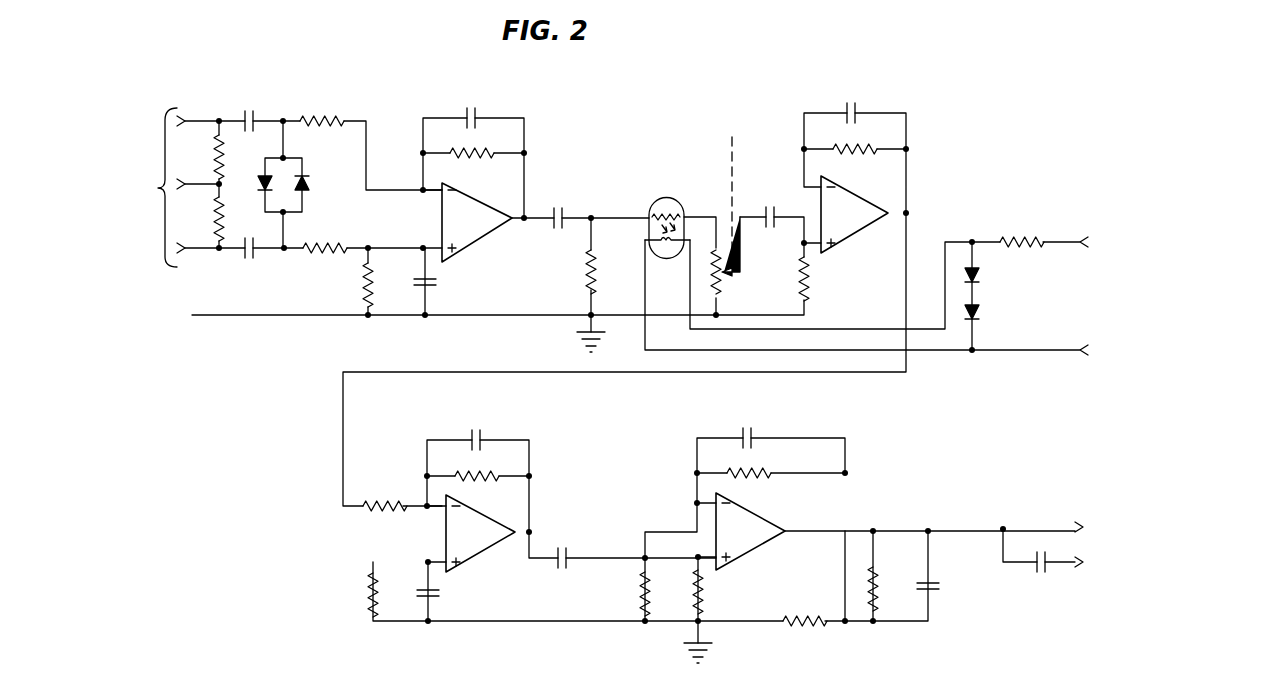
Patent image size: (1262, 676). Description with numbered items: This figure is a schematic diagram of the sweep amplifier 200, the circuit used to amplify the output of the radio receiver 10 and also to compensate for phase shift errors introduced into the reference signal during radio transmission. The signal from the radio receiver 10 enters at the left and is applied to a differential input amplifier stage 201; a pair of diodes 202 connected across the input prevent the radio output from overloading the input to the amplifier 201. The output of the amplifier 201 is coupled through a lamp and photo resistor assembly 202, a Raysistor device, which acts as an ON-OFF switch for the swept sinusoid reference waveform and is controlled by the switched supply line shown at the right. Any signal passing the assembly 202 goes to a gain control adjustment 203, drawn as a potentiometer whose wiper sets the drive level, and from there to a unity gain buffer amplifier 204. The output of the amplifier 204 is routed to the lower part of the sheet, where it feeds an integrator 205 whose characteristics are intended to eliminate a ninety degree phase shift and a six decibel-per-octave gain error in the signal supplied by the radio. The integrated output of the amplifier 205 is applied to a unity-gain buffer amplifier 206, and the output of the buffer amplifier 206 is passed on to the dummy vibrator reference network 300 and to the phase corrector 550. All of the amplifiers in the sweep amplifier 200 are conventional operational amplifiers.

The radio receiver 10 is at (127, 187).
The sweep amplifier 200 is at (182, 556).
The differential input amplifier stage 201 is at (550, 187).
The diodes / lamp and photo resistor assembly 202 is at (270, 187).
The gain control adjustment 203 is at (727, 287).
The unity gain buffer amplifier 204 is at (927, 189).
The integrator 205 is at (388, 473).
The unity-gain buffer amplifier 206 is at (663, 485).
The phase corrector 550 is at (1165, 528).
The reference network 300 is at (1108, 557).